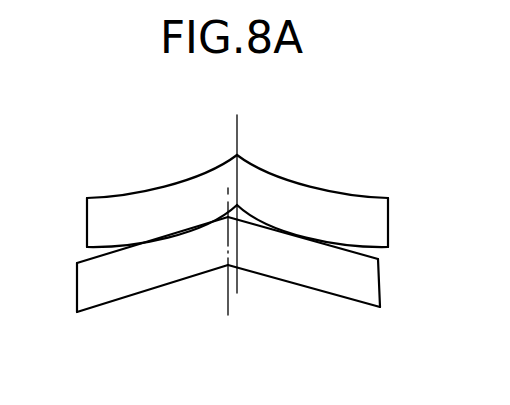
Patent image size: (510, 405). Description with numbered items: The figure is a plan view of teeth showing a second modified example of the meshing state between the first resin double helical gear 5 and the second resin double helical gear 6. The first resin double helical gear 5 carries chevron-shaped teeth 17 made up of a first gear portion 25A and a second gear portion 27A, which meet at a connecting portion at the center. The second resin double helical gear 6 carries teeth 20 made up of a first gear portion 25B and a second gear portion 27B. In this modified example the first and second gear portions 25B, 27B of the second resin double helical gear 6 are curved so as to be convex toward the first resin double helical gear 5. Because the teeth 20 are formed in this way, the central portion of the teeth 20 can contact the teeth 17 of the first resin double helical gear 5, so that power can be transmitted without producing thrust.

The first resin double helical gear 5 is at (146, 296).
The second resin double helical gear 6 is at (358, 197).
The teeth 17 is at (303, 268).
The teeth 20 is at (158, 203).
The first gear portion 25A is at (185, 272).
The first gear portion 25B is at (97, 224).
The second gear portion 27A is at (348, 287).
The second gear portion 27B is at (378, 227).